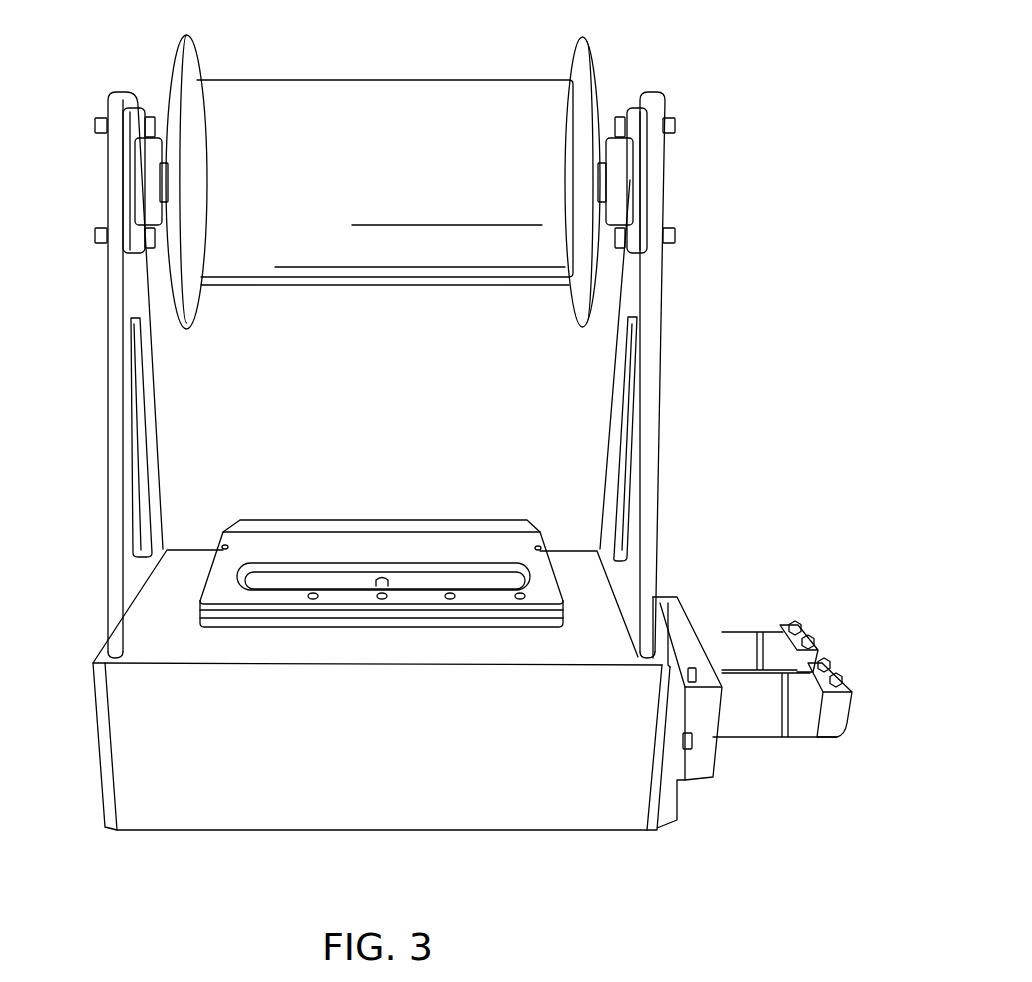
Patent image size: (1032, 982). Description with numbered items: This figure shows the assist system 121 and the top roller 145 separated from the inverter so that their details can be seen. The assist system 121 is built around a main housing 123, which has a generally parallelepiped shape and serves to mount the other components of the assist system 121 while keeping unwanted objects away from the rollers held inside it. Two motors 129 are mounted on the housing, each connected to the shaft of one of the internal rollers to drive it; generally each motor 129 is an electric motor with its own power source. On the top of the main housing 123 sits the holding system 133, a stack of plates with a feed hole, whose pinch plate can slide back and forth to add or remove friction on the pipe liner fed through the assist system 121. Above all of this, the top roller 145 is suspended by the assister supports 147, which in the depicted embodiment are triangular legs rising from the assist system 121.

The assist system 121 is at (70, 775).
The main housing 123 is at (142, 823).
The motors 129 is at (822, 628).
The holding system 133 is at (306, 530).
The top roller 145 is at (422, 88).
The assister supports 147 is at (663, 340).